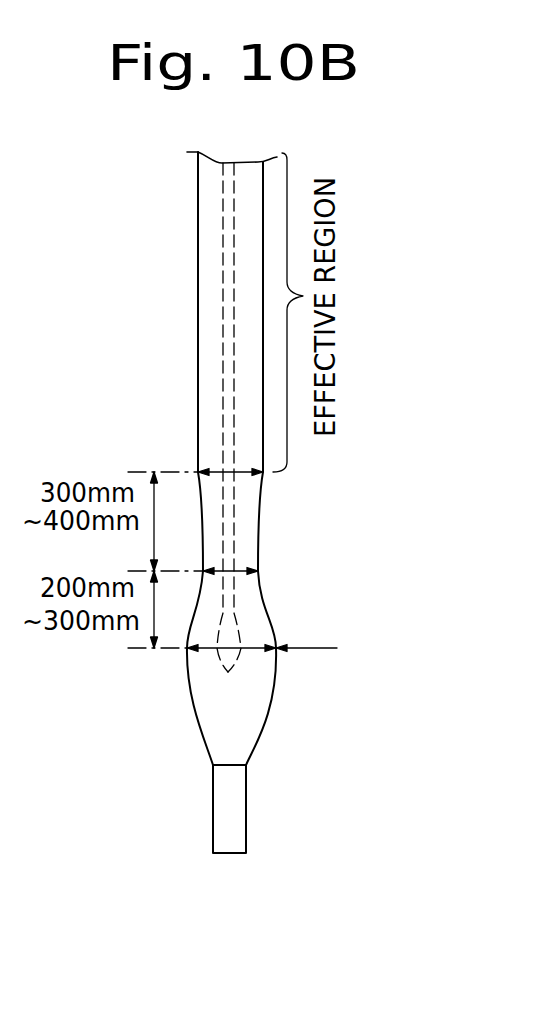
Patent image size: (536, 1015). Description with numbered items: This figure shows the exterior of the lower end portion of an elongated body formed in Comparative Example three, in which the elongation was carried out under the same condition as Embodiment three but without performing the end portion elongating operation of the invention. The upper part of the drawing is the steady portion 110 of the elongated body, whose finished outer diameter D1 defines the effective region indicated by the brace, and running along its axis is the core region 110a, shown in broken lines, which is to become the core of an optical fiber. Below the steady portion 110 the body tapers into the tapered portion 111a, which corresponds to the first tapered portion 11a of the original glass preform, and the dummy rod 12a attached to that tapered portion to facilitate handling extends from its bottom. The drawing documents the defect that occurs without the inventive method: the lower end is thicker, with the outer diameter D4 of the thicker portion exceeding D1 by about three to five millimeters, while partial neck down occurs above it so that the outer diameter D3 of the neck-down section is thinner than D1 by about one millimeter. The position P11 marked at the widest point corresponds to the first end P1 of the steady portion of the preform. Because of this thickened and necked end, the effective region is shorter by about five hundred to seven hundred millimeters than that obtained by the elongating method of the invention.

The steady portion 110 is at (198, 212).
The core region 110a is at (223, 278).
The tapered portion 111a is at (294, 706).
The first tapered portion 11a is at (238, 707).
The dummy rod 12a is at (233, 807).
The outer diameter of the steady portion D1 is at (222, 470).
The outer diameter of the neck-down section D3 is at (243, 570).
The outer diameter of the thicker portion D4 is at (250, 647).
The end of the elongated body P11 is at (353, 649).
The first end of the steady portion P1 is at (353, 649).